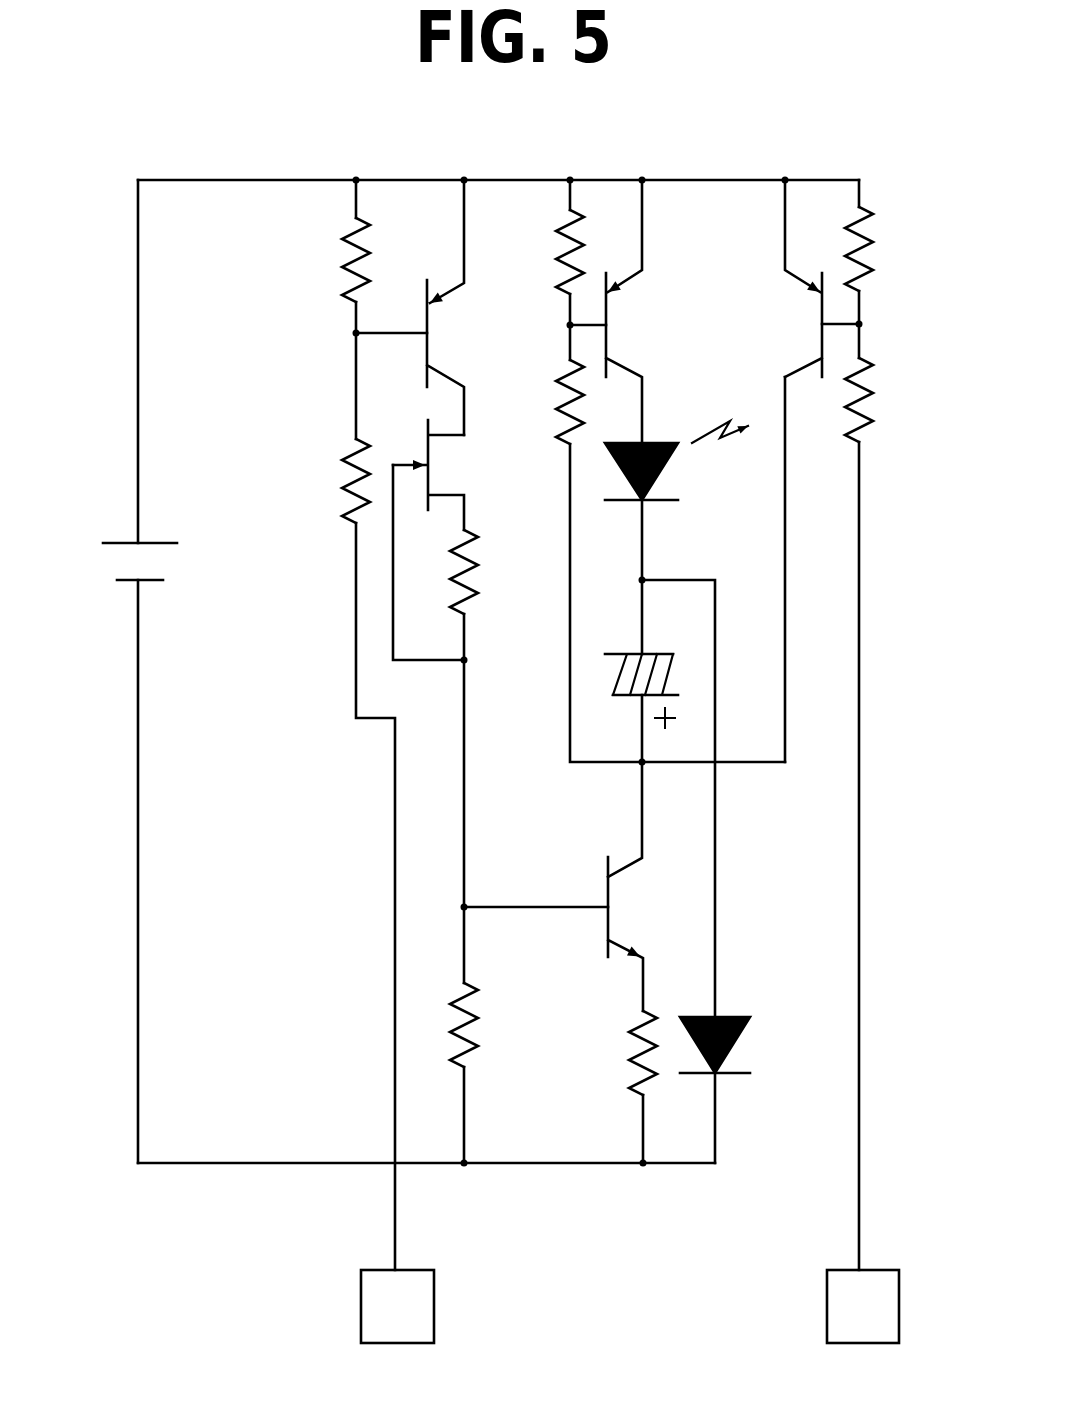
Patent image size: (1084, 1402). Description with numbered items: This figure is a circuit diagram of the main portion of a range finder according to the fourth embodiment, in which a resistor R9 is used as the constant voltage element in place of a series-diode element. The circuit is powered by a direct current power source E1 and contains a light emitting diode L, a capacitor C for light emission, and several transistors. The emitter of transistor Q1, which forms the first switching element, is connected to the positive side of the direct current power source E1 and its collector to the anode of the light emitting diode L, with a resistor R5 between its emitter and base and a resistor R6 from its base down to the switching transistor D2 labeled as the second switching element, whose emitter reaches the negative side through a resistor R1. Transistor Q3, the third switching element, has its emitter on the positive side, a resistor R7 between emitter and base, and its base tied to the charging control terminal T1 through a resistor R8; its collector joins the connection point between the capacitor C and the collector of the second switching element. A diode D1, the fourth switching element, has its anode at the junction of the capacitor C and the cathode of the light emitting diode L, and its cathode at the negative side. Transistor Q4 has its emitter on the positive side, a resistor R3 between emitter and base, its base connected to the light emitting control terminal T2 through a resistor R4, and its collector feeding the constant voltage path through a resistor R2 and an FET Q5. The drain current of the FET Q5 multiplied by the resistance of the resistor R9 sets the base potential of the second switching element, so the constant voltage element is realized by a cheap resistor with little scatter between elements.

The direct current power source E1 is at (132, 543).
The resistor R1 is at (620, 1053).
The resistor R2 is at (489, 572).
The resistor R3 is at (331, 260).
The resistor R4 is at (332, 481).
The resistor R5 is at (548, 252).
The resistor R6 is at (548, 402).
The resistor R7 is at (884, 249).
The resistor R8 is at (884, 400).
The resistor R9 is at (490, 1025).
The transistor Q1 is at (653, 311).
The transistor Q3 is at (773, 278).
The transistor Q4 is at (461, 307).
The FET Q5 is at (448, 475).
The diode D2 is at (659, 934).
The diode D1 is at (768, 1072).
The light emitting diode L is at (676, 460).
The capacitor for light emission C is at (654, 691).
The charging control terminal T1 is at (863, 1306).
The light emitting control terminal T2 is at (397, 1306).